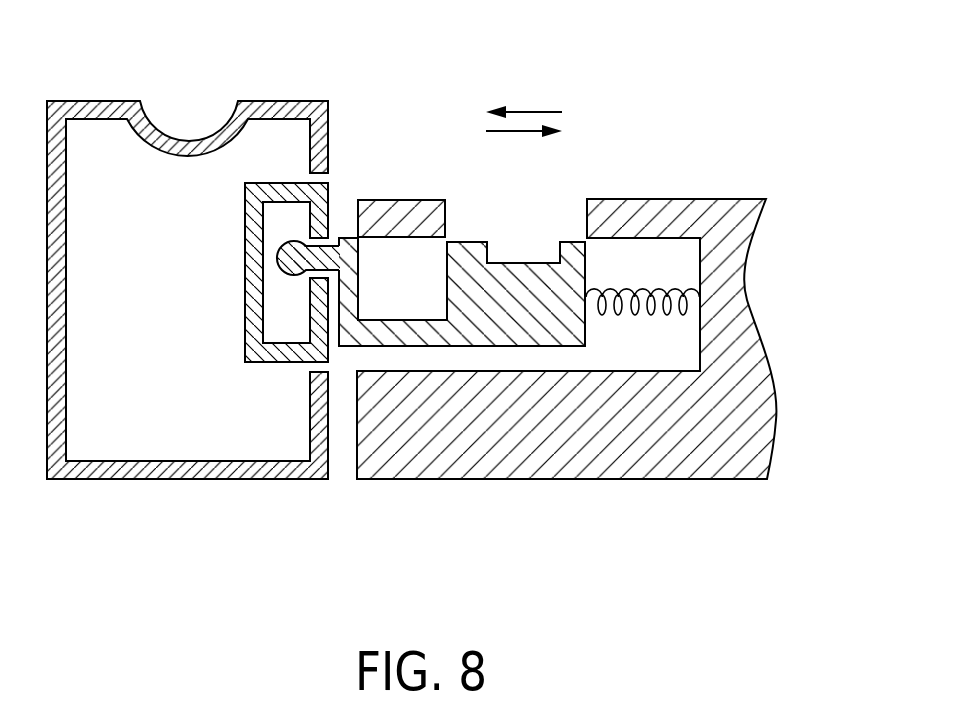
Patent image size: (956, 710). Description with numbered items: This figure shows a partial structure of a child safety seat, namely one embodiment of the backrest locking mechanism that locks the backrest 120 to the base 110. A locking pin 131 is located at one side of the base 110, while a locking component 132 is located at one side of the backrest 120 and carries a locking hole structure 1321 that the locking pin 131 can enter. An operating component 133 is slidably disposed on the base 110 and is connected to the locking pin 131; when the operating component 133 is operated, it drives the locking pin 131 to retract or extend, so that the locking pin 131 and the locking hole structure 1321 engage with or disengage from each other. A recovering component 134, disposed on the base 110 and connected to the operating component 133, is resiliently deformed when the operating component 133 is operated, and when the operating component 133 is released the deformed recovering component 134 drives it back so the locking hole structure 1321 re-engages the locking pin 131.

The base 110 is at (732, 336).
The backrest 120 is at (90, 108).
The locking pin 131 is at (318, 258).
The locking component 132 is at (279, 350).
The locking hole structure 1321 is at (300, 284).
The operating component 133 is at (515, 305).
The recovering component 134 is at (642, 287).